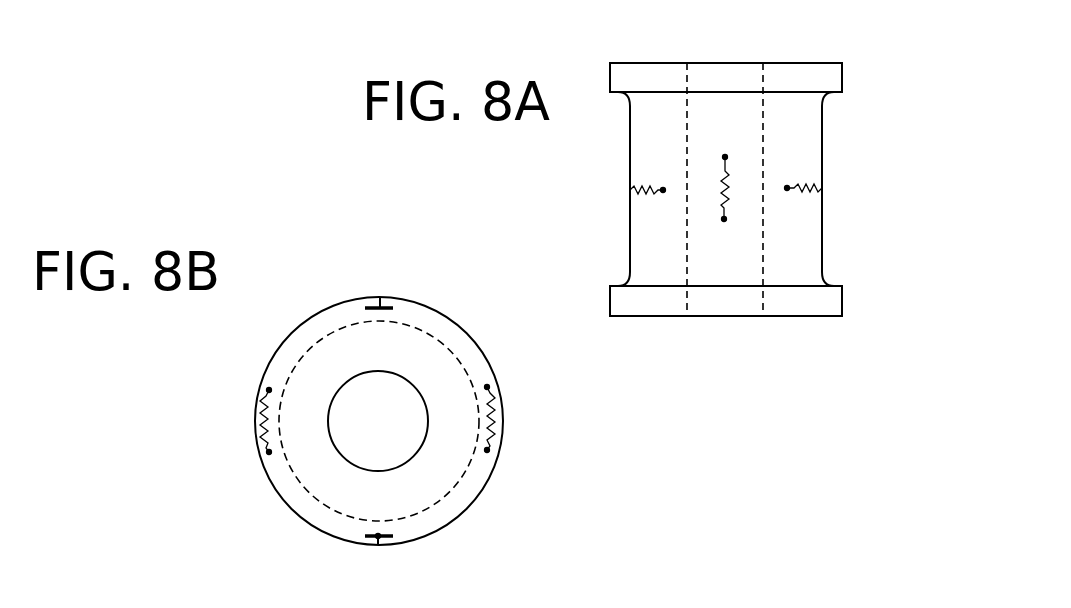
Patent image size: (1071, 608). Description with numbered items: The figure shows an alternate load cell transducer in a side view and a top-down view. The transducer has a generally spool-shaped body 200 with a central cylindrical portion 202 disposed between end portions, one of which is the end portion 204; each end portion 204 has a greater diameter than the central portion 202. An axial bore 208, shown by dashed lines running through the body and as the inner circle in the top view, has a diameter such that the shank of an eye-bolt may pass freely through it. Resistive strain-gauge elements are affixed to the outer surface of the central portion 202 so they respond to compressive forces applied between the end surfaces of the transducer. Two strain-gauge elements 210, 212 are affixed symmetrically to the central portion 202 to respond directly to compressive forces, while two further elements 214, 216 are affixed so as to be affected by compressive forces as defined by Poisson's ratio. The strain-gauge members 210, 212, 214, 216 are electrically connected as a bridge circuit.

In FIG. 8A, the spool-shaped body 200 is at (658, 62).
In FIG. 8A, the central cylindrical portion 202 is at (795, 263).
In FIG. 8A, the end portion 204 is at (838, 62).
In FIG. 8A, the axial bore 208 is at (732, 272).
In FIG. 8B, the axial bore 208 is at (358, 413).
In FIG. 8A, the strain-gauge element 210 is at (733, 170).
In FIG. 8B, the strain-gauge element 210 is at (381, 303).
In FIG. 8B, the strain-gauge element 212 is at (375, 539).
In FIG. 8A, the strain-gauge element 214 is at (637, 197).
In FIG. 8B, the strain-gauge element 214 is at (266, 421).
In FIG. 8A, the strain-gauge element 216 is at (807, 190).
In FIG. 8B, the strain-gauge element 216 is at (490, 419).